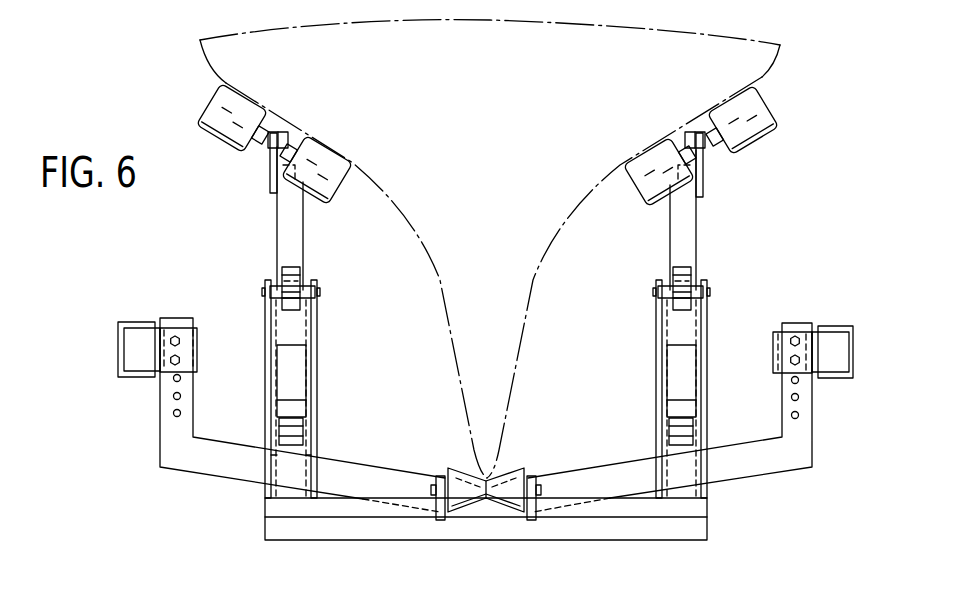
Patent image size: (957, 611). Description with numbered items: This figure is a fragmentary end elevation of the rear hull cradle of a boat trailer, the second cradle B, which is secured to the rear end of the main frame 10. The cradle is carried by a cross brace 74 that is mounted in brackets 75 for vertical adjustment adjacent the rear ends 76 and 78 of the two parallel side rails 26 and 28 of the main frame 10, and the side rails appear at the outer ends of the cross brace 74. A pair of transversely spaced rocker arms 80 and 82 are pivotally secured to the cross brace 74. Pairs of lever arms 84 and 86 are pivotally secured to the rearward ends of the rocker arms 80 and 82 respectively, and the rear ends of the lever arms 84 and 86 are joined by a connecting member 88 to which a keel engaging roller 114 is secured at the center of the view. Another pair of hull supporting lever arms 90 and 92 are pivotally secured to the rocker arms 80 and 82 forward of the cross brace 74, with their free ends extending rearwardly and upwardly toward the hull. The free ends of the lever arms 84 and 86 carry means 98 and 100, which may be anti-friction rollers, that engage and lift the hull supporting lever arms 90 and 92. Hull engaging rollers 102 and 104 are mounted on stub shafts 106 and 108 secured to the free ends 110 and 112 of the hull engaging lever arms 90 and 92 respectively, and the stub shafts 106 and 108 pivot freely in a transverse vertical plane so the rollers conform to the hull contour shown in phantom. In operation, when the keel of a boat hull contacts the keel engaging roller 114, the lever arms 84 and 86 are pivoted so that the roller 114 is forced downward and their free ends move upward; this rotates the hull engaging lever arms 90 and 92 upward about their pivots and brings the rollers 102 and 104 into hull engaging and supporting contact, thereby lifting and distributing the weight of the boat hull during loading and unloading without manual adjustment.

The main frame 10 is at (870, 344).
The side rail 26 is at (857, 372).
The side rail 28 is at (120, 366).
The cross brace 74 is at (752, 471).
The brackets 75 is at (198, 340).
The rear end of side rail 76 is at (853, 330).
The rear end of side rail 78 is at (119, 337).
The rocker arm 80 is at (684, 450).
The rocker arm 82 is at (295, 446).
The lever arm 84 is at (703, 333).
The lever arm 86 is at (268, 332).
The connecting member 88 is at (617, 535).
The hull supporting lever arm 90 is at (688, 232).
The hull supporting lever arm 92 is at (297, 232).
The lifting means 98 is at (670, 300).
The lifting means 100 is at (300, 294).
The hull engaging roller 102 is at (720, 113).
The hull engaging roller 104 is at (297, 130).
The stub shaft 106 is at (712, 150).
The stub shaft 108 is at (263, 150).
The free end of lever arm 110 is at (703, 188).
The free end of lever arm 112 is at (270, 165).
The keel engaging roller 114 is at (512, 503).
The second cradle B is at (764, 273).